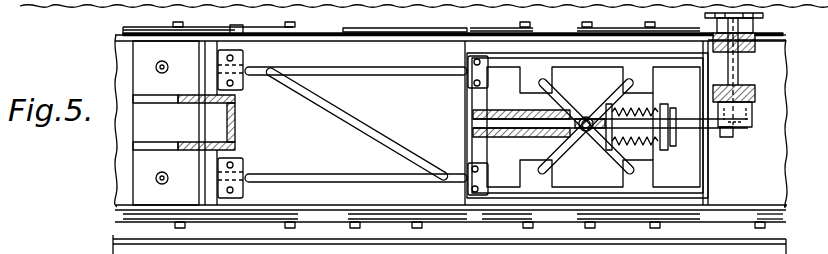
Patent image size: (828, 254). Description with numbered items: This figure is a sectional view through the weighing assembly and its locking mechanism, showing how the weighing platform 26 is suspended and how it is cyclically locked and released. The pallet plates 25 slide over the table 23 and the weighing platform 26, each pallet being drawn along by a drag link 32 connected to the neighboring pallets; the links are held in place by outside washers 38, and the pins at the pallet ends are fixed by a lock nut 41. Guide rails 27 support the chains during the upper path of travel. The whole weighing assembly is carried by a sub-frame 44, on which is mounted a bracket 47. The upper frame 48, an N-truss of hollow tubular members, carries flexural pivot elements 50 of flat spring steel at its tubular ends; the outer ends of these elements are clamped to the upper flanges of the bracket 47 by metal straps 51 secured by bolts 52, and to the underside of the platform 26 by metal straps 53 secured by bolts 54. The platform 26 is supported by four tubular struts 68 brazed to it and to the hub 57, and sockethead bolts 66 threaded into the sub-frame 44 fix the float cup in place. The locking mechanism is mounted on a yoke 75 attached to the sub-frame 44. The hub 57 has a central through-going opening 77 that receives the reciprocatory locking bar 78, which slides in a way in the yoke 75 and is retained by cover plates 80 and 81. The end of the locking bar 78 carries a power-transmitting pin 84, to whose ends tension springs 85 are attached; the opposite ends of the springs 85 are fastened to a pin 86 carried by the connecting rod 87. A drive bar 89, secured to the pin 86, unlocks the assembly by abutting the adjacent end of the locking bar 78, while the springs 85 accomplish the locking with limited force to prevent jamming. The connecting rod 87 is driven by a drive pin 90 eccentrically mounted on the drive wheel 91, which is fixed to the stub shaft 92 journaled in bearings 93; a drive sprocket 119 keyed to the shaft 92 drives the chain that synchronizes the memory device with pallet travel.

The table 23 is at (349, 31).
The pallet plates 25 is at (402, 34).
The weighing platform 26 is at (535, 48).
The guide rails 27 is at (376, 42).
The drag link 32 is at (507, 30).
The outside washers 38 is at (659, 230).
The lock nut 41 is at (356, 228).
The sub-frame 44 is at (88, 6).
The bracket 47 is at (192, 94).
The upper frame 48 is at (350, 182).
The flexural pivot elements 50 is at (247, 62).
The metal straps 51 is at (250, 38).
The bolts 52 is at (233, 38).
The metal straps 53 is at (485, 78).
The bolts 54 is at (466, 90).
The hub 57 is at (592, 104).
The sockethead bolts 66 is at (594, 253).
The struts 68 is at (608, 158).
The yoke 75 is at (504, 111).
The through-going opening 77 is at (540, 135).
The locking bar 78 is at (530, 117).
The cover plate 80 is at (518, 137).
The cover plate 81 is at (668, 141).
The power-transmitting pin 84 is at (572, 140).
The tension springs 85 is at (658, 105).
The pin 86 is at (666, 110).
The connecting rod 87 is at (692, 136).
The drive bar 89 is at (676, 119).
The drive pin 90 is at (719, 141).
The drive wheel 91 is at (741, 130).
The stub shaft 92 is at (740, 73).
The bearings 93 is at (758, 95).
The drive sprocket 119 is at (705, 17).